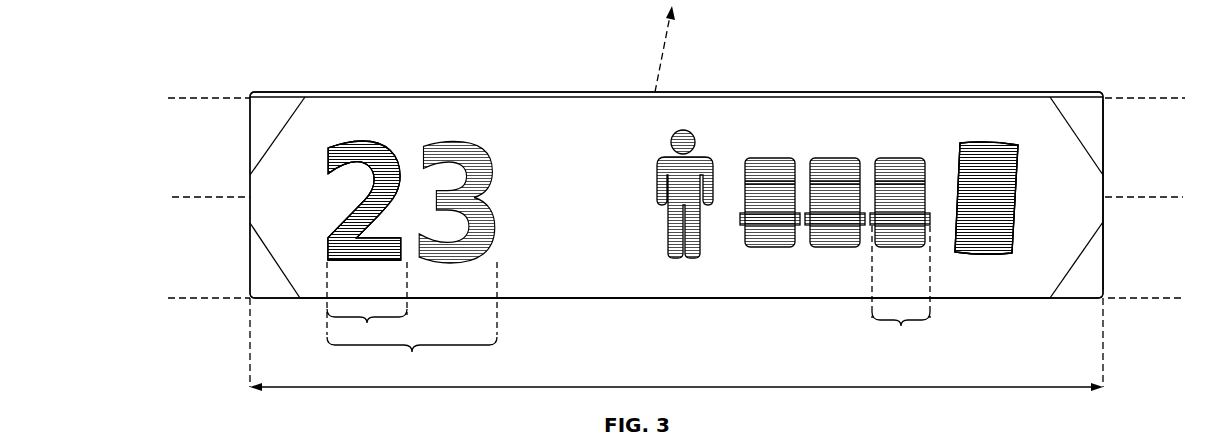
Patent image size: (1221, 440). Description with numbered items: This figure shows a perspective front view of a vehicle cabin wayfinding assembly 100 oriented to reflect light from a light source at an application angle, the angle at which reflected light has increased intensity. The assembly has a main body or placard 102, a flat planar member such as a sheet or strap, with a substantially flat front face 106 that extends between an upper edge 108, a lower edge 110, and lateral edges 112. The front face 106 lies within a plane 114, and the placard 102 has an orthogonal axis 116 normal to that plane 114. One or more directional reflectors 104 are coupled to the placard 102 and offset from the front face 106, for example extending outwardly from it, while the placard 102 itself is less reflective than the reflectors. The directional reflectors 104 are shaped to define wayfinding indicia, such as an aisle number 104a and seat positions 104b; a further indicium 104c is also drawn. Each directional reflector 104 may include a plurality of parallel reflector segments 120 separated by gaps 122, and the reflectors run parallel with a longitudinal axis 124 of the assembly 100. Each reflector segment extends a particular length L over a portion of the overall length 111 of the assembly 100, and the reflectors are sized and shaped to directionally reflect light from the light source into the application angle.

The vehicle cabin wayfinding assembly 100 is at (219, 66).
The placard 102 is at (250, 151).
The directional reflector 104 is at (367, 143).
The aisle number 104a is at (412, 324).
The seat positions 104b is at (770, 158).
The display item (card with letter O) 104c is at (990, 143).
The front face 106 is at (1103, 140).
The upper edge 108 is at (562, 95).
The lower edge 110 is at (507, 300).
The overall length 111 is at (712, 385).
The lateral edges 112 is at (250, 232).
The plane 114 is at (183, 99).
The orthogonal axis 116 is at (663, 43).
The reflector segments 120 is at (345, 149).
The gaps 122 is at (384, 156).
The longitudinal axis 124 is at (188, 199).